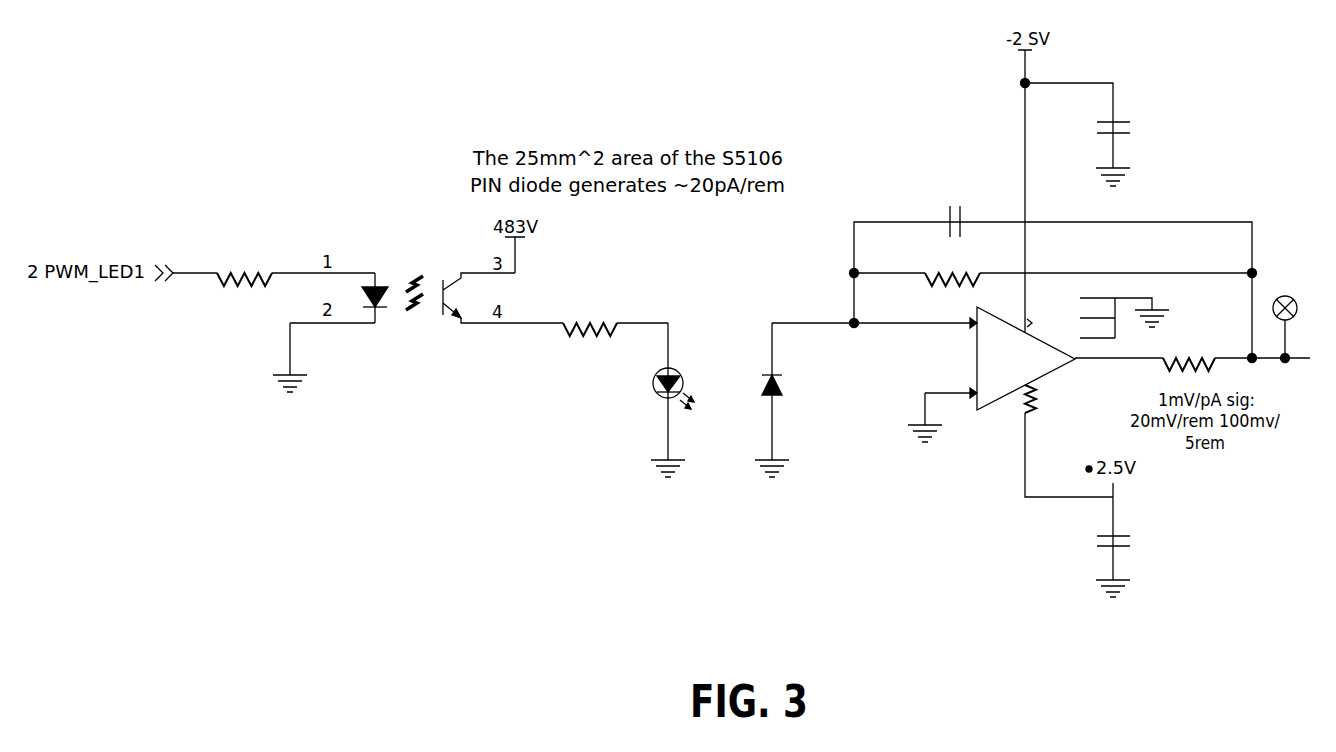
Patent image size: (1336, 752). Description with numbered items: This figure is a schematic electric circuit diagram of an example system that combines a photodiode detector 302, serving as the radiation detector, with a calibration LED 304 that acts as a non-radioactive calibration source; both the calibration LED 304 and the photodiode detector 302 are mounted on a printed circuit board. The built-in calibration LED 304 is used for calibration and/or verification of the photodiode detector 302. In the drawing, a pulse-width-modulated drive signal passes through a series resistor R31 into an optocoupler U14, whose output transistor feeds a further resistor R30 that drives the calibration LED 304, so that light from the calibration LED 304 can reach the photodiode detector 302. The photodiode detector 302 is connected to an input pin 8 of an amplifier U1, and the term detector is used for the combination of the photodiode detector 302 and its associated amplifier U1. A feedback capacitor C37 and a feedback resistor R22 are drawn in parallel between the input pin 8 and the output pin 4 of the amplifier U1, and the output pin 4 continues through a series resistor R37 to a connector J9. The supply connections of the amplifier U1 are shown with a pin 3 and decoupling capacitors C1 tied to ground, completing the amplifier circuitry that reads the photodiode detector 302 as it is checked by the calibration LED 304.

The photodiode detector 302 is at (767, 393).
The calibration LED 304 is at (652, 397).
The resistor R31 330 ohm R31 is at (245, 269).
The resistor R30 2.2K R30 is at (591, 319).
The feedback resistor R22 1G R22 is at (945, 269).
The output resistor R37 0 ohm R37 is at (1186, 354).
The feedback capacitor C37 470pF C37 is at (964, 219).
The decoupling capacitor C1 0.1uF C1 is at (1101, 340).
The optocoupler U14 LTV-8168 U14 is at (451, 298).
The operational amplifier U1 LMP7721 U1 is at (1038, 360).
The connector J9 DNS J9 is at (1283, 301).
The op amp input pin 8 is at (915, 315).
The op amp output pin 4 is at (1119, 349).
The op amp pin 3 supply connection 3 is at (1038, 399).